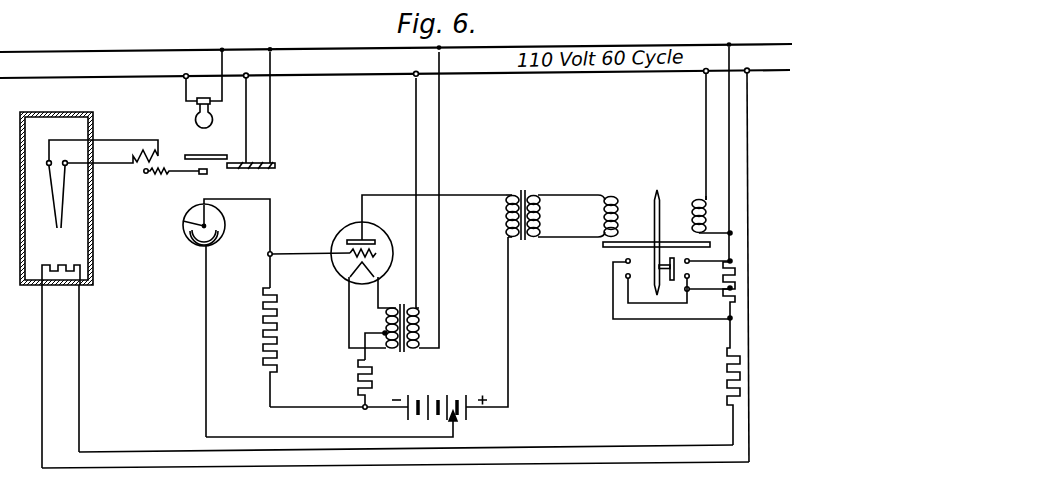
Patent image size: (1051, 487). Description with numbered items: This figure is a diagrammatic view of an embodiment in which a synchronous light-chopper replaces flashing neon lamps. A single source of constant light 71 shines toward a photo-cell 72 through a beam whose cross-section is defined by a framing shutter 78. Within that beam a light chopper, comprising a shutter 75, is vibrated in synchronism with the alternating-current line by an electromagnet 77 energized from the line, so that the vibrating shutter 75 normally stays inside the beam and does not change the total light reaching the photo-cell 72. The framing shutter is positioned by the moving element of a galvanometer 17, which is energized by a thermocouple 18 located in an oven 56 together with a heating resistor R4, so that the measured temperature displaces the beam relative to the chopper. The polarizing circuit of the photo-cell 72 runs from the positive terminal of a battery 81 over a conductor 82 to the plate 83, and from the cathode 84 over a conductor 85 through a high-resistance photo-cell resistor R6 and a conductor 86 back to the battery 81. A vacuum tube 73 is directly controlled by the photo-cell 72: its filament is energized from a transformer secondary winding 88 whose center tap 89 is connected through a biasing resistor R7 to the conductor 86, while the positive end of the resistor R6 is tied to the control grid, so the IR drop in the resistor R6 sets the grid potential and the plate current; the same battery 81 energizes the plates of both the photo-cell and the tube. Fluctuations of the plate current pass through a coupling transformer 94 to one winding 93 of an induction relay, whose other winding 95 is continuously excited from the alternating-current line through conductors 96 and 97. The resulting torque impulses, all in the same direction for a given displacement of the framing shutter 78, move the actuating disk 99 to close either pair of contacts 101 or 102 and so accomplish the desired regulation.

The galvanometer 17 is at (131, 157).
The thermocouple 18 is at (62, 200).
The oven 56 is at (94, 246).
The heating resistor R4 is at (60, 242).
The source of constant light 71 is at (196, 121).
The photo-cell 72 is at (225, 222).
The vacuum tube 73 is at (387, 239).
The shutter 75 is at (208, 175).
The electromagnet 77 is at (276, 165).
The framing shutter 78 is at (190, 155).
The battery 81 is at (437, 400).
The conductor 82 is at (210, 437).
The plate 83 is at (189, 238).
The cathode 84 is at (183, 221).
The conductor 85 is at (272, 220).
The conductor 86 is at (300, 396).
The transformer secondary winding 88 is at (388, 309).
The center tap 89 is at (383, 332).
The photo-cell resistor R6 is at (279, 330).
The biasing resistor R7 is at (375, 378).
The relay winding 93 is at (624, 190).
The coupling transformer 94 is at (530, 190).
The relay winding 95 is at (683, 190).
The conductor 96 is at (706, 128).
The conductor 97 is at (729, 96).
The actuating element or disk 99 is at (643, 242).
The contacts 101 is at (690, 266).
The contacts 102 is at (613, 264).